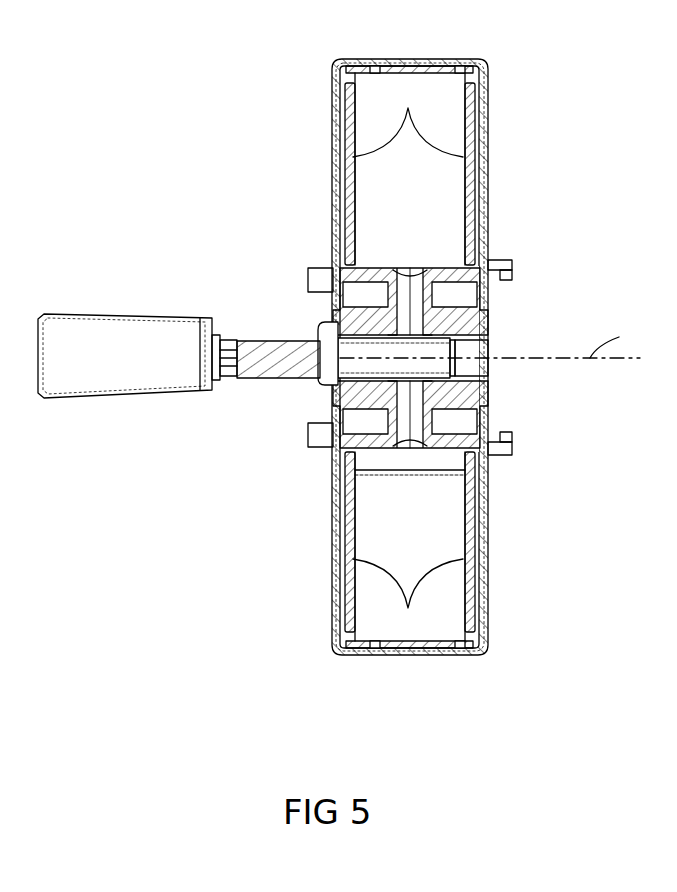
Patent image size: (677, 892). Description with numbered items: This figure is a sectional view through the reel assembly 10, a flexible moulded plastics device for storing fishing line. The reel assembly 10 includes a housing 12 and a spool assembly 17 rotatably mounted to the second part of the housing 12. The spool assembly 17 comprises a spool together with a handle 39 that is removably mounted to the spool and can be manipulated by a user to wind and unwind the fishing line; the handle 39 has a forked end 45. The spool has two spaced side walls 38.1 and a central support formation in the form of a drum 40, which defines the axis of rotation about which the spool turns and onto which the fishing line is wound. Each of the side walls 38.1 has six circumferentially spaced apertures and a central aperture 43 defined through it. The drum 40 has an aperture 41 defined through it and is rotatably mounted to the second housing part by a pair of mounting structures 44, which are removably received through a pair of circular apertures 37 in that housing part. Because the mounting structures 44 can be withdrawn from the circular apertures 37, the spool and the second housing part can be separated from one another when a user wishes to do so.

The reel assembly 10 is at (207, 118).
The housing 12 is at (493, 73).
The spool assembly 17 is at (312, 395).
The circular apertures 37 is at (492, 300).
The side walls 38.1 is at (408, 359).
The handle 39 is at (131, 316).
The drum 40 is at (460, 323).
The aperture 41 is at (405, 274).
The central aperture 43 is at (460, 362).
The mounting structures 44 is at (343, 348).
The forked end 45 is at (418, 367).